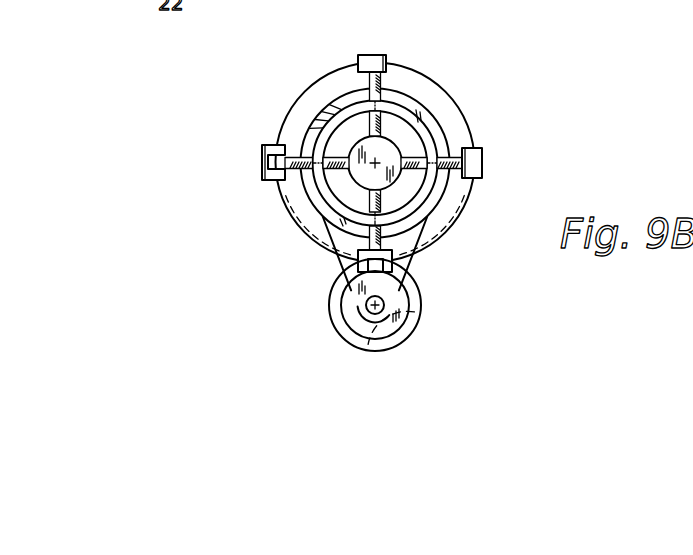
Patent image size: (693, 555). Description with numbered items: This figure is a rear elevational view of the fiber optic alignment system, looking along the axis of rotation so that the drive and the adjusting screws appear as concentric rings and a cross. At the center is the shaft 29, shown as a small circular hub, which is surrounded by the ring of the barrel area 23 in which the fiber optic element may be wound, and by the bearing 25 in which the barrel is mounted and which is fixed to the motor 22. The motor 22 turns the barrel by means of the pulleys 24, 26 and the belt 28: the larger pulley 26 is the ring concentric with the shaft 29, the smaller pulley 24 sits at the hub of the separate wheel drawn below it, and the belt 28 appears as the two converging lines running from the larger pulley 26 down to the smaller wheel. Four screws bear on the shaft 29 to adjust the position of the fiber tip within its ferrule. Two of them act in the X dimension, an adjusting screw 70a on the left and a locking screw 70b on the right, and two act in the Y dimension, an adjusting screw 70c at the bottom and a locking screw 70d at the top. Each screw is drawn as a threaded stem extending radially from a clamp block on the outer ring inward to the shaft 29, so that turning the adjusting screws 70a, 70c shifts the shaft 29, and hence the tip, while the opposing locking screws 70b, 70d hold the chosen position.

The motor 22 is at (421, 288).
The area 23 is at (322, 196).
The pulley 24 is at (366, 314).
The bearing 25 is at (468, 202).
The pulley 26 is at (336, 108).
The belt 28 is at (420, 227).
The shaft 29 is at (391, 141).
The adjusting screw 70a is at (264, 145).
The locking screw 70b is at (483, 163).
The adjusting screw 70c is at (322, 250).
The locking screw 70d is at (366, 55).